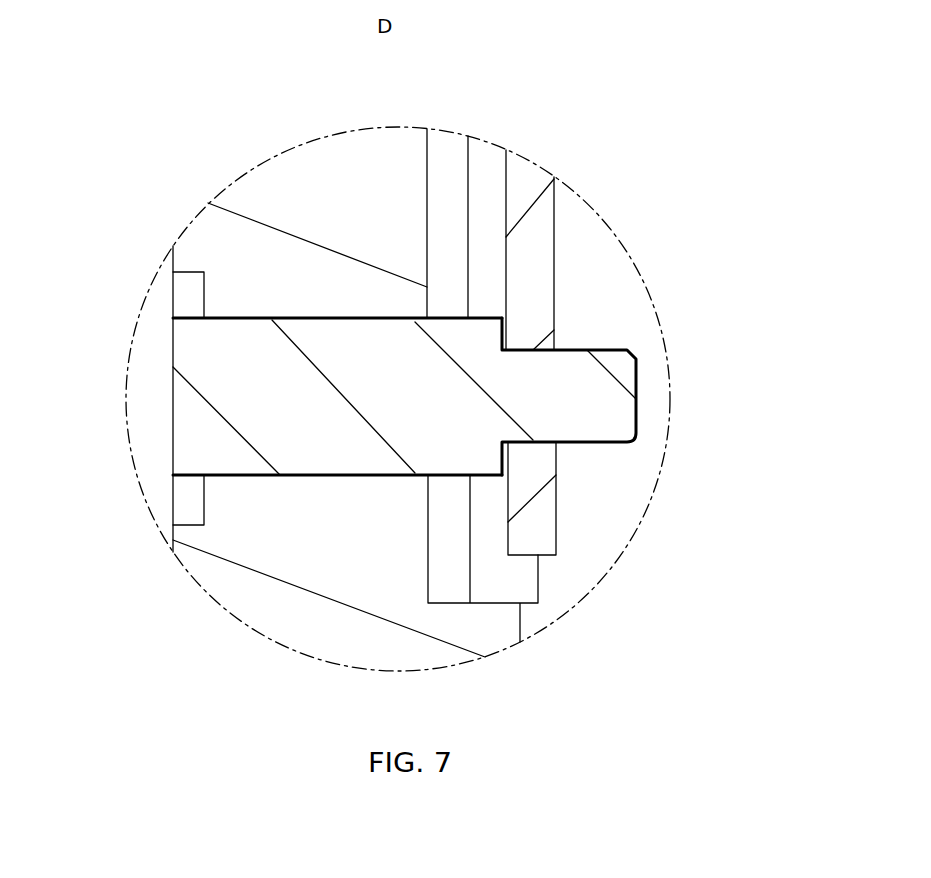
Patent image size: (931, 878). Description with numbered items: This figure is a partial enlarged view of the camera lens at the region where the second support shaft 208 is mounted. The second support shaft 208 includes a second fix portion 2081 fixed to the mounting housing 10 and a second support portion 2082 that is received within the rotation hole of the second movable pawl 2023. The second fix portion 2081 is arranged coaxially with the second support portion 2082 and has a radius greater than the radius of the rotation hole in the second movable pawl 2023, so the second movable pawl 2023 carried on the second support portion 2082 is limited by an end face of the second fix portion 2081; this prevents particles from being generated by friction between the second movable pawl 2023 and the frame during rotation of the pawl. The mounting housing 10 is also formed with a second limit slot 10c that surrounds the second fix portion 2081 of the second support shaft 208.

The mounting housing 10 is at (277, 248).
The second limit slot 10c is at (187, 302).
The second movable pawl 2023 is at (533, 283).
The second support shaft 208 is at (498, 453).
The second fix portion 2081 is at (390, 433).
The second support portion 2082 is at (572, 382).